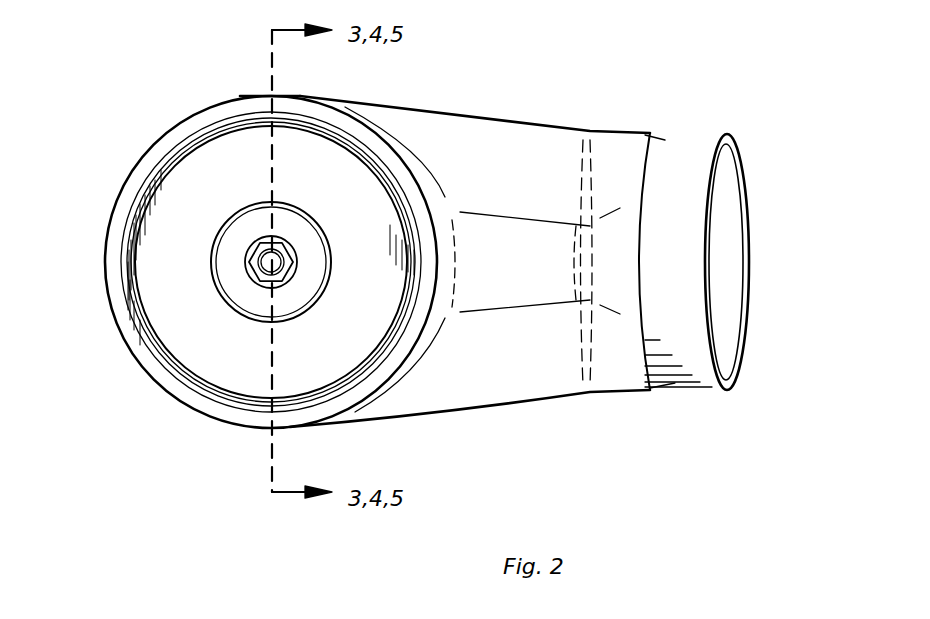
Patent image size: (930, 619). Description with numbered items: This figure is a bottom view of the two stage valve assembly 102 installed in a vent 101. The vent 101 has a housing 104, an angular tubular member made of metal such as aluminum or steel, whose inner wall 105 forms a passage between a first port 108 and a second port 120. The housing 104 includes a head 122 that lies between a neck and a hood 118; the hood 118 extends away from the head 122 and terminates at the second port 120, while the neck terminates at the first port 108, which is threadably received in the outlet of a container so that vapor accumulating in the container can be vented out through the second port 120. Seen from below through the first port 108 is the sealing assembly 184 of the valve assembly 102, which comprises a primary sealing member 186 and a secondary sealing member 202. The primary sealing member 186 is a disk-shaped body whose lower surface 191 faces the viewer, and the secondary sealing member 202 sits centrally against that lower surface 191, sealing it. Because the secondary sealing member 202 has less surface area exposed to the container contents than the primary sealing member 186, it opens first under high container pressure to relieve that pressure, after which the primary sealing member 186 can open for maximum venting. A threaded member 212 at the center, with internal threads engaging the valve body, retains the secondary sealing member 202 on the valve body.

The vent 101 is at (635, 80).
The valve assembly 102 is at (100, 82).
The housing 104 is at (447, 113).
The inner wall 105 is at (740, 225).
The first port 108 is at (212, 122).
The hood 118 is at (530, 162).
The second port 120 is at (737, 132).
The head 122 is at (130, 165).
The sealing assembly 184 is at (115, 368).
The primary sealing member 186 is at (188, 342).
The lower surface 191 is at (242, 378).
The secondary sealing member 202 is at (235, 258).
The threaded member 212 is at (255, 250).